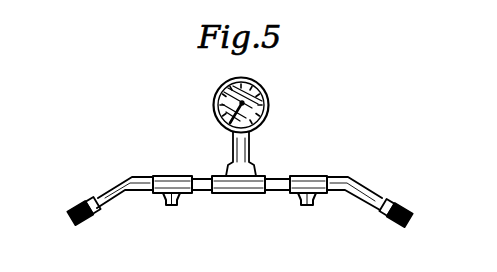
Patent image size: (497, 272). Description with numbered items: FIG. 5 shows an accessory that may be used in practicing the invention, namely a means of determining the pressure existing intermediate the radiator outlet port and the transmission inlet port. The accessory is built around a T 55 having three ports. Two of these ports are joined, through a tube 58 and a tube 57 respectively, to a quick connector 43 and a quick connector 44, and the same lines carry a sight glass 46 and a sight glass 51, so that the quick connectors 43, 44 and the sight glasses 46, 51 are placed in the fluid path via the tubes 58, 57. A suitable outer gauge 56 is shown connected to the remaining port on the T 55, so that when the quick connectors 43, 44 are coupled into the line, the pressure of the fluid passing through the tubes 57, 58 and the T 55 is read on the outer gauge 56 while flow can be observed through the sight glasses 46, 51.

The quick connector 43 is at (89, 193).
The quick connector 44 is at (398, 192).
The sight glass 46 is at (306, 206).
The sight glass 51 is at (171, 206).
The T 55 is at (241, 196).
The outer gauge 56 is at (255, 143).
The tube 57 is at (345, 178).
The tube 58 is at (136, 177).